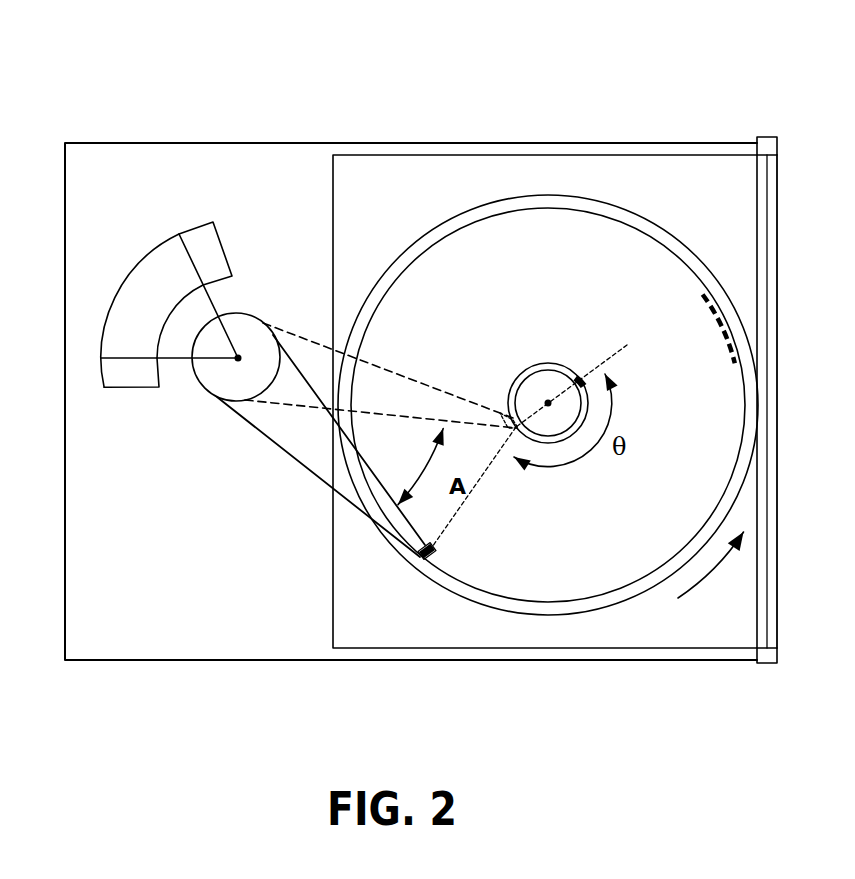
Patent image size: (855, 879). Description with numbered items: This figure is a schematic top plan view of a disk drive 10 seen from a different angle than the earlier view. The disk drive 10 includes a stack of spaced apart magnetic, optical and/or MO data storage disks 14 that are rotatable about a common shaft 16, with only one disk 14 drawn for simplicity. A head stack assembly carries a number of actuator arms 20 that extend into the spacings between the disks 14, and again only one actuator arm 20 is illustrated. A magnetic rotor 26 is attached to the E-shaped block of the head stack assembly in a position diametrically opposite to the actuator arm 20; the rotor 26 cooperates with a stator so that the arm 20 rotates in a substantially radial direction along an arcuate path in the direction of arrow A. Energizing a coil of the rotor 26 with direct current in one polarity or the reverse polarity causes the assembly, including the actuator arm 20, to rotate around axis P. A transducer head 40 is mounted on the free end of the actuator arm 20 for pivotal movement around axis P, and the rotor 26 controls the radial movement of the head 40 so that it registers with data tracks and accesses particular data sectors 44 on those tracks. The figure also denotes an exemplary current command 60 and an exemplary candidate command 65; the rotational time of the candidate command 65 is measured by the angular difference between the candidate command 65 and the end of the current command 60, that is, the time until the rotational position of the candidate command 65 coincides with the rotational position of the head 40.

The disk drive 10 is at (407, 46).
The data storage disk 14 is at (635, 272).
The common shaft 16 is at (546, 402).
The actuator arm 20 is at (288, 432).
The magnetic rotor 26 is at (160, 258).
The transducer head 40 is at (518, 428).
The data sector 44 is at (712, 297).
The current command 60 is at (437, 556).
The candidate command 65 is at (579, 381).
The axis P is at (239, 356).